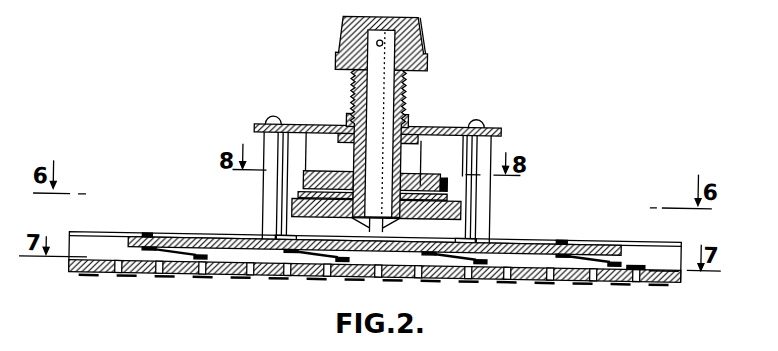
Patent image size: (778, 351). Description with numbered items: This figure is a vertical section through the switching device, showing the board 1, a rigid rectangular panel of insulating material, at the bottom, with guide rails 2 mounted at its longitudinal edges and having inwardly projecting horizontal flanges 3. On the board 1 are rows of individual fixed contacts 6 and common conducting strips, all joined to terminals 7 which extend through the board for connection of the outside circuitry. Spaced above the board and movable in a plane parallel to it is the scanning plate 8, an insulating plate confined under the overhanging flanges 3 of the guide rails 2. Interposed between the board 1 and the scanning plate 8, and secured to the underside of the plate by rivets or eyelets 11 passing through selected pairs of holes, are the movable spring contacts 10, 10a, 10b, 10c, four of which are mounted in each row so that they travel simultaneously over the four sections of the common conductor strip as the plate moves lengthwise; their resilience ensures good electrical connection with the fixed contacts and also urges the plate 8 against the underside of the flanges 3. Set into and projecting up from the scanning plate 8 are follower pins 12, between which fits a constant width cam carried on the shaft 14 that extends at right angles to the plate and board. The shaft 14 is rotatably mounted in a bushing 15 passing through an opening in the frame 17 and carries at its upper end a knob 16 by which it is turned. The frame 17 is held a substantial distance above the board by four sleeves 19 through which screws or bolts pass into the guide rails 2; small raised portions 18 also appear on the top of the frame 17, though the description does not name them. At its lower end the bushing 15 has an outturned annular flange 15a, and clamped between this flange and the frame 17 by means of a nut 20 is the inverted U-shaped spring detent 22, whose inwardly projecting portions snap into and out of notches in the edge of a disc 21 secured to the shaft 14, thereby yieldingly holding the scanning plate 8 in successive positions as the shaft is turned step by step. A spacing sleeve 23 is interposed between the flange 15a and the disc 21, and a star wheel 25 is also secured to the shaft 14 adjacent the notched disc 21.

The board 1 is at (98, 278).
The guide rails 2 is at (80, 248).
The horizontal flanges 3 is at (118, 244).
The fixed contacts 6 is at (637, 262).
The terminals 7 is at (200, 279).
The scanning plate 8 is at (230, 241).
The spring contacts 10 is at (183, 252).
The spring contact 10a is at (320, 265).
The spring contact 10b is at (470, 265).
The spring contact 10c is at (600, 267).
The rivets or eyelets 11 is at (152, 241).
The follower pins 12 is at (281, 212).
The shaft 14 is at (372, 148).
The bushing 15 is at (401, 80).
The outturned annular flange 15a is at (401, 150).
The knob 16 is at (417, 39).
The frame 17 is at (329, 124).
The boss 18 is at (277, 120).
The sleeves 19 is at (269, 142).
The nut 20 is at (405, 122).
The disc 21 is at (447, 185).
The spring detent 22 is at (411, 167).
The spacing sleeve 23 is at (352, 163).
The star wheel 25 is at (450, 200).